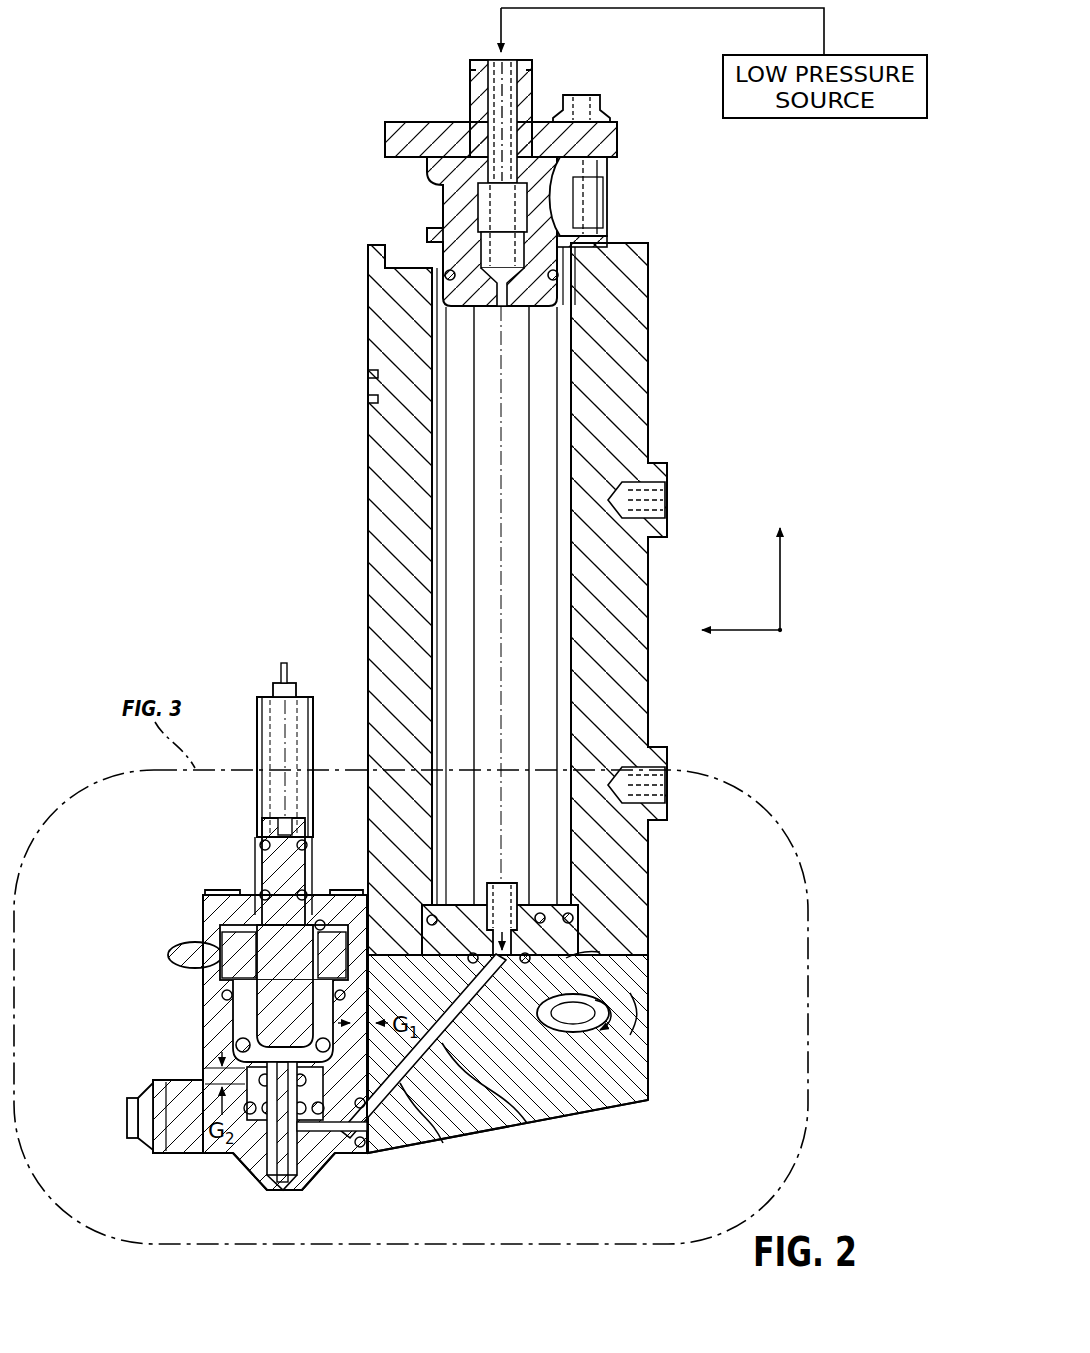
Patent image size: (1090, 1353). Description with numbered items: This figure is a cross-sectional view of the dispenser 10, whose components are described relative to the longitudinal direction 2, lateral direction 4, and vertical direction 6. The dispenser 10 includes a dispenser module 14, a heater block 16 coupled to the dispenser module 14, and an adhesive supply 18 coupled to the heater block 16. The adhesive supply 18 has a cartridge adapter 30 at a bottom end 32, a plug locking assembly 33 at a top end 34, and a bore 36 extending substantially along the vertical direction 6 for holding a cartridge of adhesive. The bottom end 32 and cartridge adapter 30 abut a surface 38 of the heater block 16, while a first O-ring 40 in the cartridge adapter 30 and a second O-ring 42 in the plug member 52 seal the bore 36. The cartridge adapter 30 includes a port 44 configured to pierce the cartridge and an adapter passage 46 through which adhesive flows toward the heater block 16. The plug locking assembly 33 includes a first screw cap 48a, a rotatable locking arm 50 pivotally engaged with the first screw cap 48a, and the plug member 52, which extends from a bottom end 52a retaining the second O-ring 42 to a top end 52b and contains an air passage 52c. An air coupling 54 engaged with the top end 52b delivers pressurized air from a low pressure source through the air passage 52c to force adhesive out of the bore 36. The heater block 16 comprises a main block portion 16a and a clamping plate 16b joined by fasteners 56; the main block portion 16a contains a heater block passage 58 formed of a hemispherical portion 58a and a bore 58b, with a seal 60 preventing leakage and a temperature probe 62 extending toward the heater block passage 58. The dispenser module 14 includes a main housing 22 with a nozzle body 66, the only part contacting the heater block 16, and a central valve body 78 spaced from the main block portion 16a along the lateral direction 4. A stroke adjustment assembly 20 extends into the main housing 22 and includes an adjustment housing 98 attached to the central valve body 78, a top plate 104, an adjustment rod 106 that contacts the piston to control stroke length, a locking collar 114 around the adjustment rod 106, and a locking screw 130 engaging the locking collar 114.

The dispenser 10 is at (292, 434).
The dispenser module 14 is at (198, 895).
The heater block 16 is at (622, 1082).
The main block portion 16a is at (578, 1108).
The clamping plate 16b is at (173, 1155).
The adhesive supply 18 is at (620, 374).
The stroke adjustment assembly 20 is at (248, 848).
The main housing 22 is at (203, 933).
The cartridge adapter 30 is at (592, 888).
The bottom end 32 is at (612, 963).
The plug locking assembly 33 is at (424, 227).
The top end 34 is at (648, 246).
The bore 36 is at (556, 425).
The surface 38 is at (540, 960).
The first O-ring 40 is at (580, 908).
The second O-ring 42 is at (562, 265).
The port 44 is at (478, 890).
The adapter passage 46 is at (515, 905).
The first screw cap 48a is at (603, 96).
The locking arm 50 is at (385, 133).
The plug member 52 is at (568, 205).
The bottom end 52a is at (580, 298).
The top end 52b is at (592, 168).
The air passage 52c is at (496, 216).
The air coupling 54 is at (470, 84).
The fasteners 56 is at (127, 1118).
The heater block passage 58 is at (527, 1124).
The hemispherical portion 58a is at (512, 940).
The bore 58b is at (455, 1128).
The seal 60 is at (580, 930).
The temperature probe 62 is at (616, 1010).
The nozzle body 66 is at (336, 1156).
The central valve body 78 is at (203, 1030).
The adjustment housing 98 is at (364, 922).
The top plate 104 is at (203, 910).
The adjustment rod 106 is at (274, 983).
The locking collar 114 is at (322, 920).
The locking screw 130 is at (195, 957).
The longitudinal direction 2 is at (791, 645).
The lateral direction 4 is at (741, 645).
The vertical direction 6 is at (791, 579).